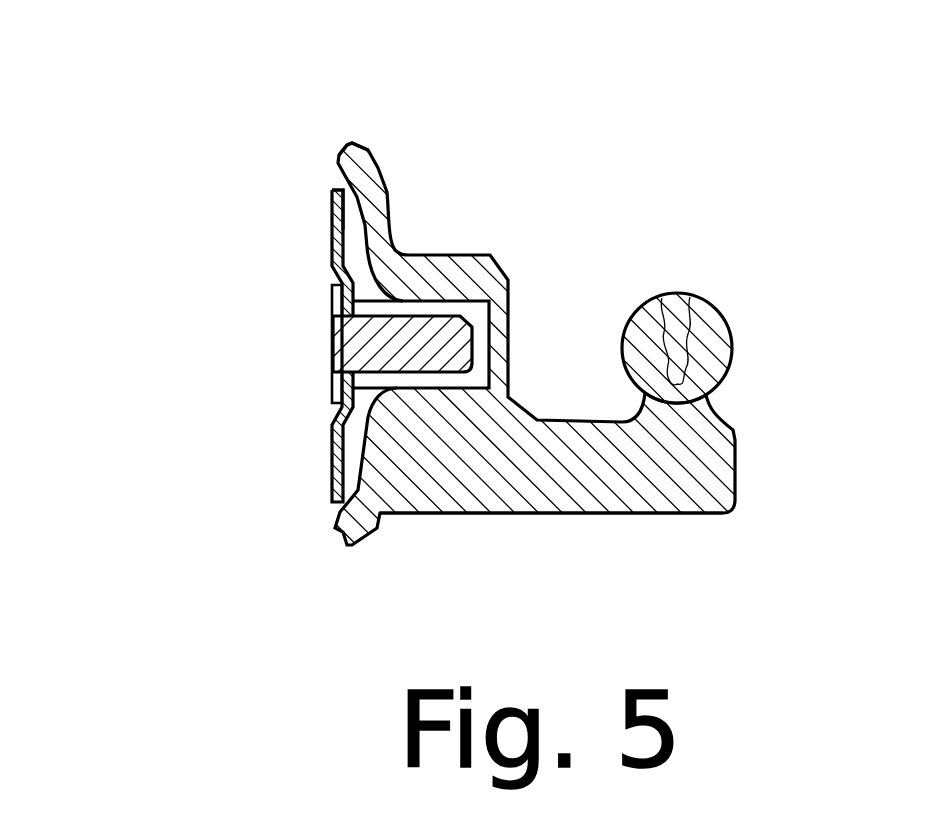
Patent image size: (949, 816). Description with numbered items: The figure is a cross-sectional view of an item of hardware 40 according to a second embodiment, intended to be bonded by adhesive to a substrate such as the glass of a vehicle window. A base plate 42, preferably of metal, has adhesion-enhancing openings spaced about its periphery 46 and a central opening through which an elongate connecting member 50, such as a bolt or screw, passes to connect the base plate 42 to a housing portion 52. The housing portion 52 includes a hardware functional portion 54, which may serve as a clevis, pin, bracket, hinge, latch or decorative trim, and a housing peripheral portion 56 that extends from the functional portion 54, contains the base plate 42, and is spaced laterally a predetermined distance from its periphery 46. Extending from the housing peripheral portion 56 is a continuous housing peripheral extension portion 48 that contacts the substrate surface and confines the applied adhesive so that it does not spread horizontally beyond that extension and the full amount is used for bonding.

The item of hardware 40 is at (338, 270).
The base plate 42 is at (331, 222).
The periphery 46 is at (331, 196).
The continuous housing peripheral extension portion 48 is at (338, 162).
The elongate connecting member 50 is at (430, 316).
The housing portion 52 is at (429, 513).
The hardware functional portion 54 is at (729, 326).
The housing peripheral portion 56 is at (368, 150).